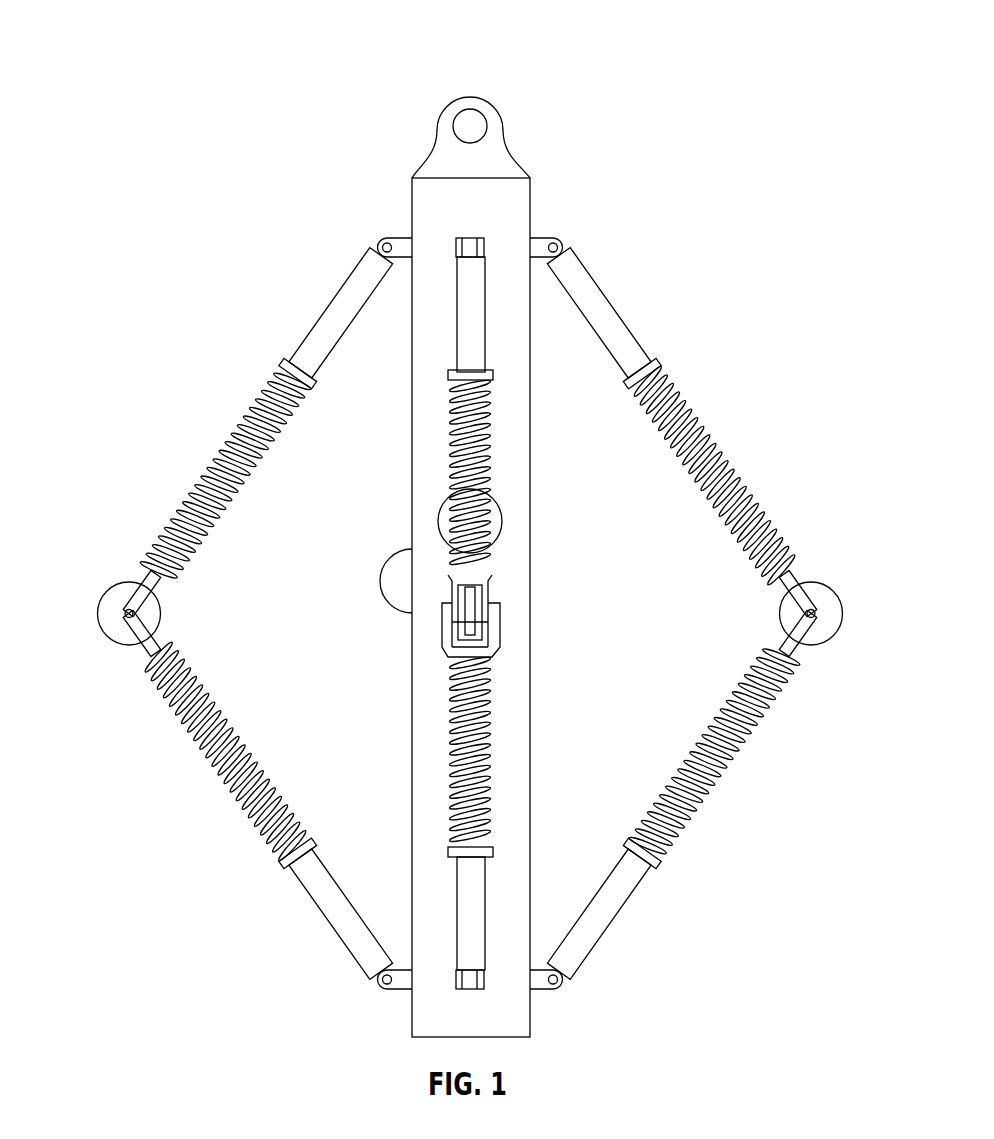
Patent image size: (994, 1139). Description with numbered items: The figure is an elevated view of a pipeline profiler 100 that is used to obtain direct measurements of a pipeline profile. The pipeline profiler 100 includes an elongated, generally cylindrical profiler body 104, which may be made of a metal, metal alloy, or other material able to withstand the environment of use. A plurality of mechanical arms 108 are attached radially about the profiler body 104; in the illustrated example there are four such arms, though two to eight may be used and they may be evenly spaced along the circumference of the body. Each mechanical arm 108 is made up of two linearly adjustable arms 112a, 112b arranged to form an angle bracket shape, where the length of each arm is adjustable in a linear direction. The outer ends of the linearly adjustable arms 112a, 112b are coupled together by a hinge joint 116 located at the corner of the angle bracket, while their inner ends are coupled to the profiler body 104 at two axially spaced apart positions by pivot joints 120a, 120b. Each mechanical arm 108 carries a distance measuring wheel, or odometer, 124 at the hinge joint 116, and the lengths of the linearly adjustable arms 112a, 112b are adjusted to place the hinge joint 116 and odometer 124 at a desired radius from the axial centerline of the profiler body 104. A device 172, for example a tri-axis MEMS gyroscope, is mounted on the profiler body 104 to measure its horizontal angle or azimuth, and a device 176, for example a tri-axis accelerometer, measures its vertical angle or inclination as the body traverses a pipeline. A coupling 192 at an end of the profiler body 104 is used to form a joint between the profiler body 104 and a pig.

The pipeline profiler 100 is at (478, 66).
The profiler body 104 is at (532, 555).
The mechanical arm 108 is at (318, 310).
The linearly adjustable arm 112a is at (635, 338).
The linearly adjustable arm 112b is at (627, 902).
The hinge joint 116 is at (818, 613).
The pivot joint 120a is at (557, 240).
The pivot joint 120b is at (558, 990).
The distance measuring wheel 124 is at (470, 612).
The device 172 is at (503, 515).
The device 176 is at (378, 582).
The coupling 192 is at (513, 165).